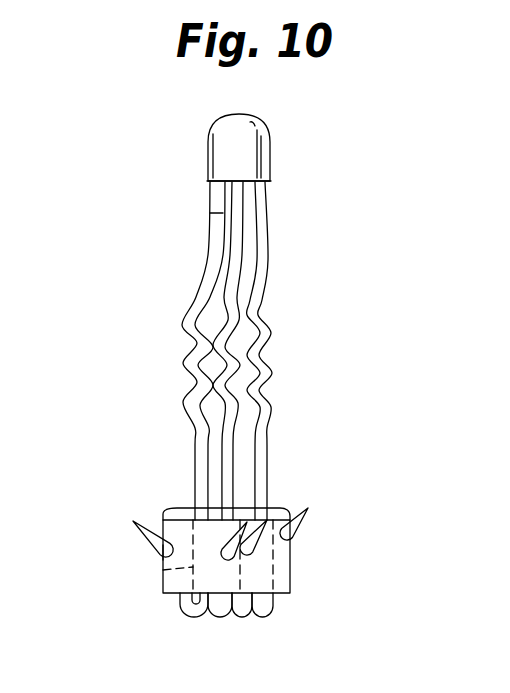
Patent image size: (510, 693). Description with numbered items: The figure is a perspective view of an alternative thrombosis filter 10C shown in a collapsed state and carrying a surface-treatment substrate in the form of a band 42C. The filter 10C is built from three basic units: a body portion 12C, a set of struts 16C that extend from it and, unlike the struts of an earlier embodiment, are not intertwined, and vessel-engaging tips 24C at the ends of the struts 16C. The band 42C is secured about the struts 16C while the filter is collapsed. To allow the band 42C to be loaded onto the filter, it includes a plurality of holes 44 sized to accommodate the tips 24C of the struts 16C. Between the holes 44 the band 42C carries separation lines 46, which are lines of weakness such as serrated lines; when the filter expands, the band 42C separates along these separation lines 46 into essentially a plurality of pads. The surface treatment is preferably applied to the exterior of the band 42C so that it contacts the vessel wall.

The thrombosis filter 10C is at (170, 312).
The body portion 12C is at (215, 127).
The struts 16C is at (267, 328).
The vessel-engaging tips 24C is at (133, 521).
The band 42C is at (290, 578).
The holes 44 is at (162, 555).
The separation lines 46 is at (163, 570).